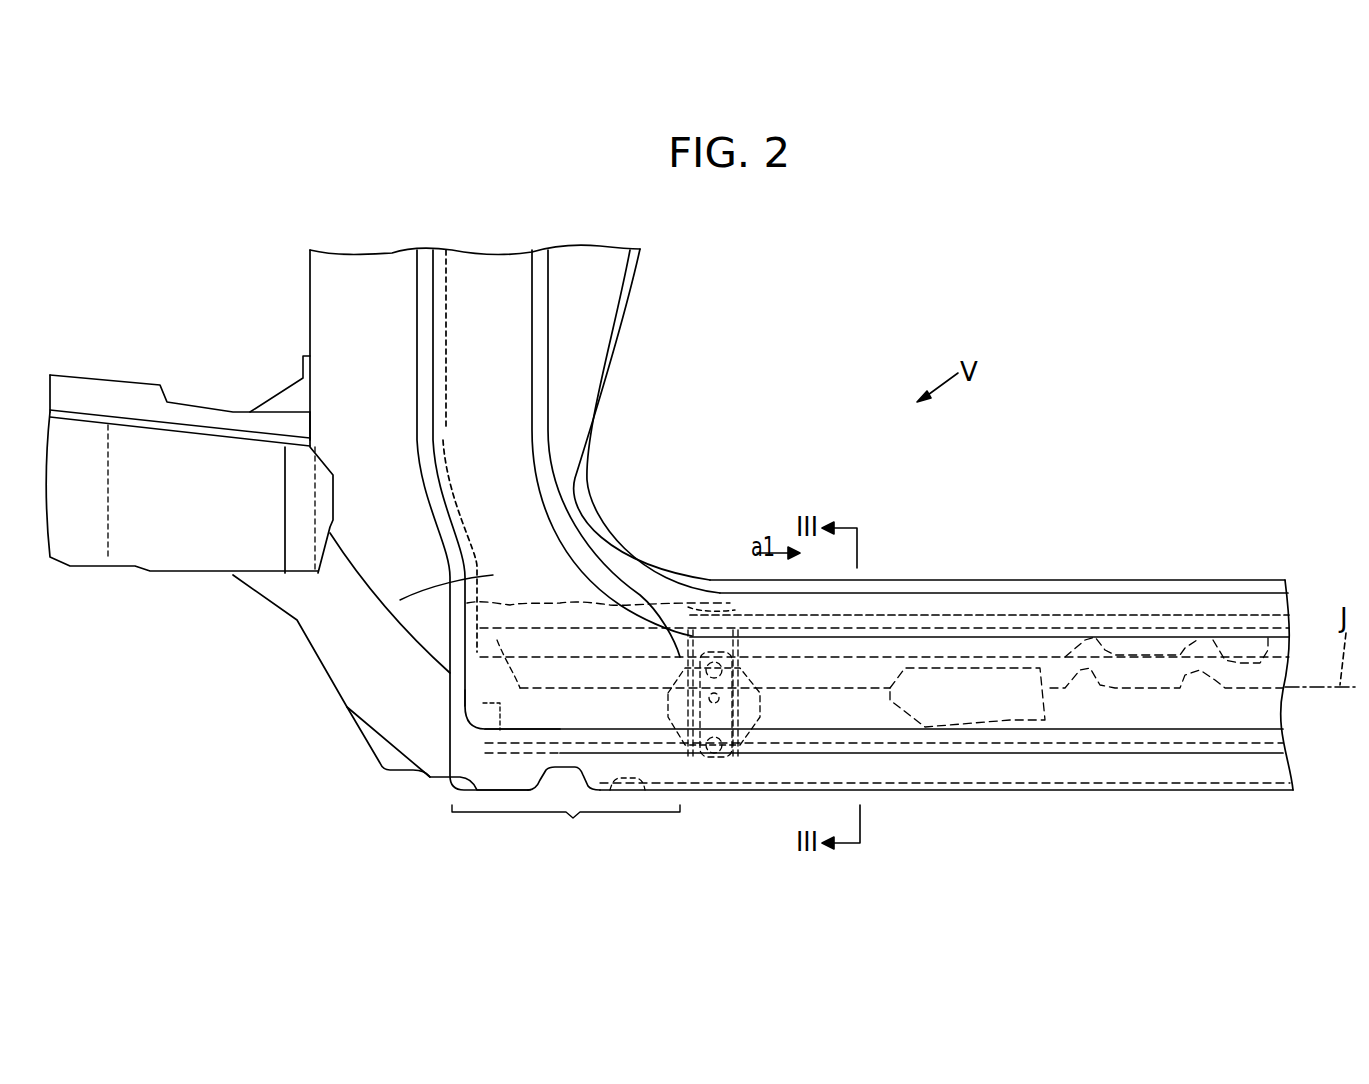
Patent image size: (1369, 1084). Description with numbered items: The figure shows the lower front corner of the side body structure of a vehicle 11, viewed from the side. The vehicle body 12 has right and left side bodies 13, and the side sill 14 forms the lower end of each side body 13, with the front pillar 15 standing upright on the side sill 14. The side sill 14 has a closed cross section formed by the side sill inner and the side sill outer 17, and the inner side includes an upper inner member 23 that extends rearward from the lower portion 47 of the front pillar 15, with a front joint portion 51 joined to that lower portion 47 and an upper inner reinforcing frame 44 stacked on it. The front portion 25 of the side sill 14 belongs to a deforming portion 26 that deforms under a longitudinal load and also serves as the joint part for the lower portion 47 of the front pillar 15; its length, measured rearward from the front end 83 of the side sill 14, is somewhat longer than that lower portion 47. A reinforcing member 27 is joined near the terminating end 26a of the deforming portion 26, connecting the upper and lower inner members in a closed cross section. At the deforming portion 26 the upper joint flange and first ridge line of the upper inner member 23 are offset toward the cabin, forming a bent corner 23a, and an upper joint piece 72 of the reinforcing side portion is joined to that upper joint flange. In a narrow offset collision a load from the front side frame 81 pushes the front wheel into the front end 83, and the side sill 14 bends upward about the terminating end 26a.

The vehicle 11 is at (248, 298).
The vehicle body 12 is at (497, 251).
The side body 13 is at (647, 290).
The side sill 14 is at (1066, 553).
The front pillar 15 is at (583, 245).
The side sill outer 17 is at (1153, 713).
The upper inner member 23 is at (867, 691).
The bent corner 23a is at (695, 602).
The front portion 25 is at (530, 710).
The deforming portion 26 is at (566, 809).
The terminating end 26a is at (688, 607).
The reinforcing member 27 is at (680, 657).
The upper inner reinforcing frame 44 is at (810, 657).
The lower portion 47 is at (400, 600).
The front joint portion 51 is at (642, 690).
The upper joint piece 72 is at (733, 630).
The front side frame 81 is at (115, 410).
The front end 83 is at (450, 652).